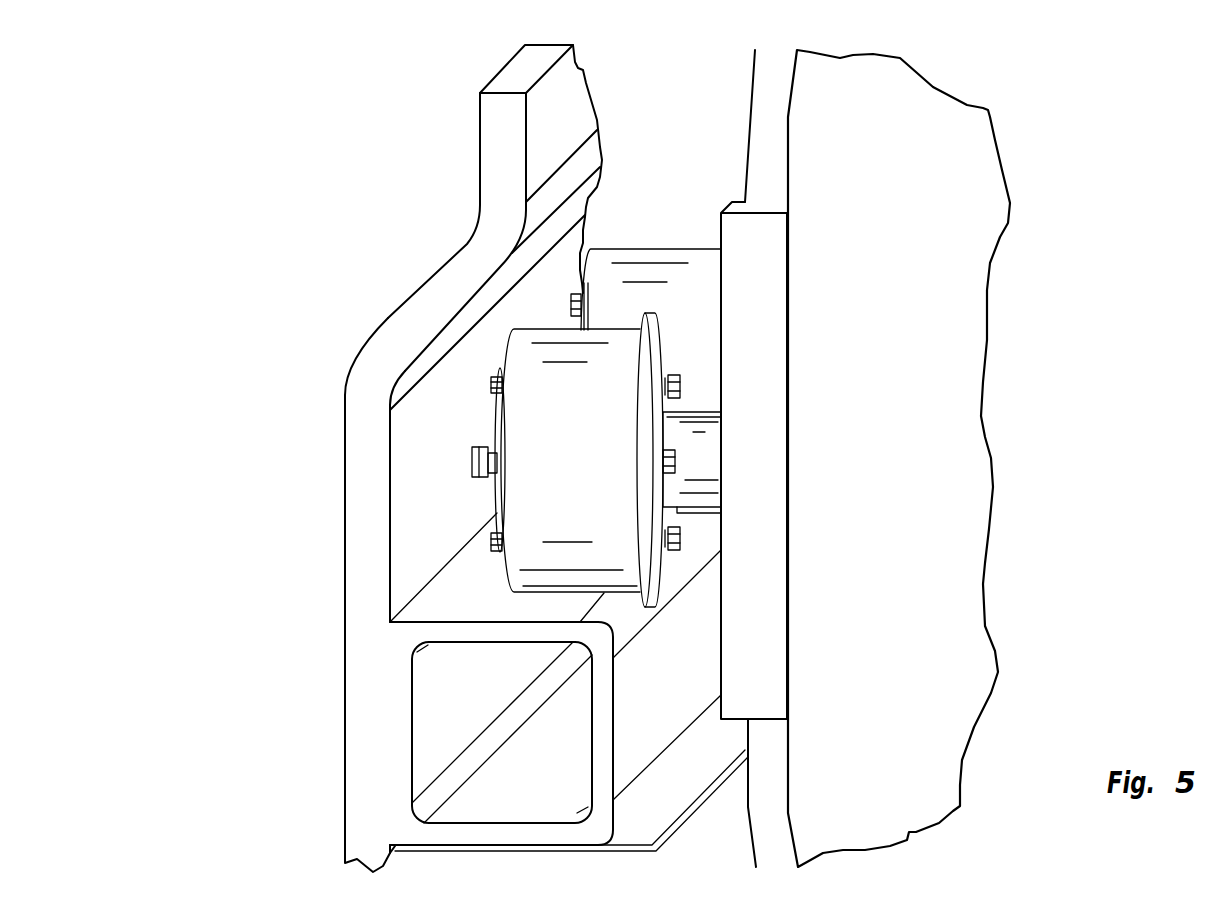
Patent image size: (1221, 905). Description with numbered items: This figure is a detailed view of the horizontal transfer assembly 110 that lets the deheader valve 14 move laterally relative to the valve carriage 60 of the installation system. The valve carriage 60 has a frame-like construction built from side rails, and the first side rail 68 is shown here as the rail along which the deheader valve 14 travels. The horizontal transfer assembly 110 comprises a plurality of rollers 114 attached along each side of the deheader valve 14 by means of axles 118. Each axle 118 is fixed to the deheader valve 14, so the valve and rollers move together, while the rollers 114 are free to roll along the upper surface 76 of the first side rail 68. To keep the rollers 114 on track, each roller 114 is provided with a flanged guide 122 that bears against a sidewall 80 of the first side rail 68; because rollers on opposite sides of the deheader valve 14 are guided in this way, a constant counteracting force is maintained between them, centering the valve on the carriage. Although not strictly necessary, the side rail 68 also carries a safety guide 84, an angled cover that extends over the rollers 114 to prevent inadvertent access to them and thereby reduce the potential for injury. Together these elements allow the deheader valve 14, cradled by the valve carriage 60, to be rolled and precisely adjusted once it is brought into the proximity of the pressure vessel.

The deheader valve 14 is at (901, 226).
The valve carriage 60 is at (445, 458).
The first side rail 68 is at (343, 642).
The upper surface 76 is at (497, 605).
The sidewall 80 is at (657, 685).
The safety guide 84 is at (423, 312).
The horizontal transfer assembly 110 is at (667, 375).
The roller 114 is at (635, 319).
The axle 118 is at (710, 447).
The flanged guide 122 is at (657, 582).